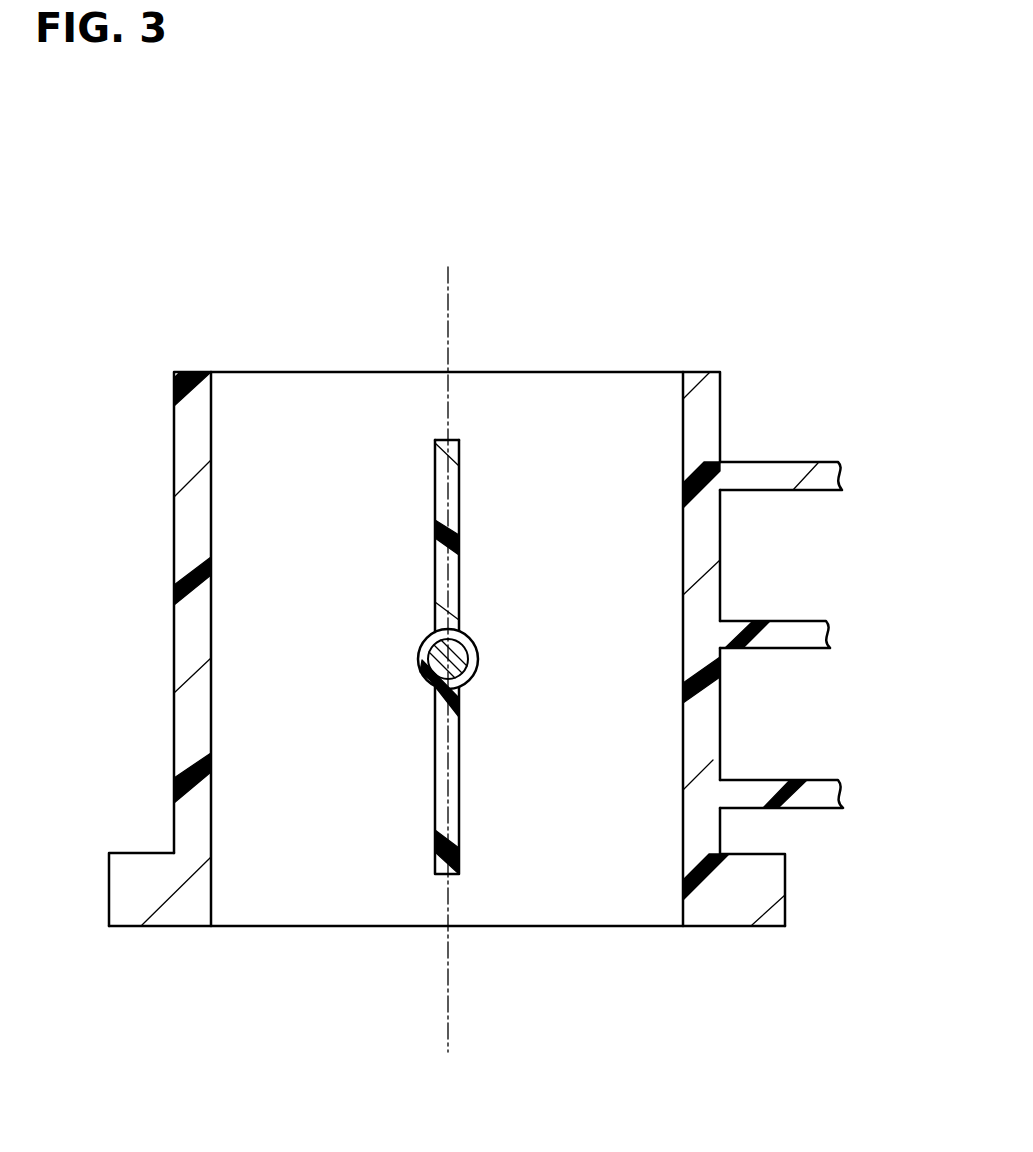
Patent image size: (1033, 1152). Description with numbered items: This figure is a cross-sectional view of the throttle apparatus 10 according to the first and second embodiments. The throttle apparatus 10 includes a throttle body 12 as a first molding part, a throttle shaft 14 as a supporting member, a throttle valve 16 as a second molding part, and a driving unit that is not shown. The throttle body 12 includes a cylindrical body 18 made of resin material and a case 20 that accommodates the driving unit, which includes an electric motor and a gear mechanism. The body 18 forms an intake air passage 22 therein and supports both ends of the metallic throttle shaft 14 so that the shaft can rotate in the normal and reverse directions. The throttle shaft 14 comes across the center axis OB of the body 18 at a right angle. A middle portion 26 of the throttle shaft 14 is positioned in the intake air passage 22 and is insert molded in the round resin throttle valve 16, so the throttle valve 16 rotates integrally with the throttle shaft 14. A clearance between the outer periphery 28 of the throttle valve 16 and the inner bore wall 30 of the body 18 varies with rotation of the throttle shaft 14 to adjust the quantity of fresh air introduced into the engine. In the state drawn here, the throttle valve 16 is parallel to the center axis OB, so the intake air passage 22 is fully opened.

The throttle apparatus 10 is at (764, 354).
The throttle body 12 is at (758, 623).
The throttle shaft 14 is at (428, 656).
The throttle valve 16 is at (441, 553).
The body 18 is at (712, 438).
The case 20 is at (780, 391).
The intake air passage 22 is at (577, 908).
The middle portion 26 is at (284, 668).
The outer periphery 28 is at (451, 441).
The inner bore wall 30 is at (682, 421).
The center axis OB is at (448, 1004).